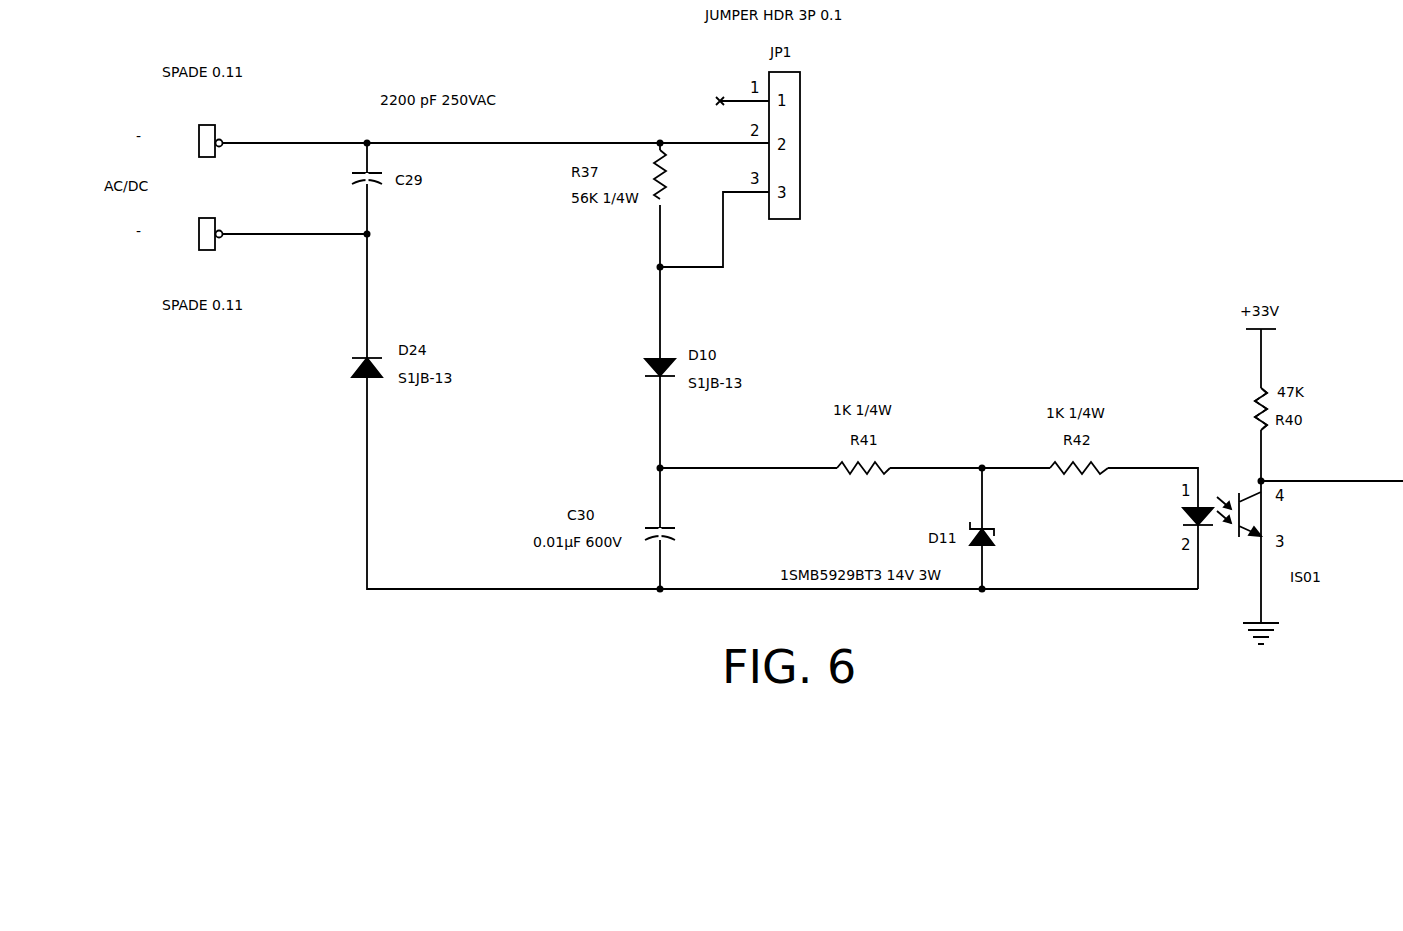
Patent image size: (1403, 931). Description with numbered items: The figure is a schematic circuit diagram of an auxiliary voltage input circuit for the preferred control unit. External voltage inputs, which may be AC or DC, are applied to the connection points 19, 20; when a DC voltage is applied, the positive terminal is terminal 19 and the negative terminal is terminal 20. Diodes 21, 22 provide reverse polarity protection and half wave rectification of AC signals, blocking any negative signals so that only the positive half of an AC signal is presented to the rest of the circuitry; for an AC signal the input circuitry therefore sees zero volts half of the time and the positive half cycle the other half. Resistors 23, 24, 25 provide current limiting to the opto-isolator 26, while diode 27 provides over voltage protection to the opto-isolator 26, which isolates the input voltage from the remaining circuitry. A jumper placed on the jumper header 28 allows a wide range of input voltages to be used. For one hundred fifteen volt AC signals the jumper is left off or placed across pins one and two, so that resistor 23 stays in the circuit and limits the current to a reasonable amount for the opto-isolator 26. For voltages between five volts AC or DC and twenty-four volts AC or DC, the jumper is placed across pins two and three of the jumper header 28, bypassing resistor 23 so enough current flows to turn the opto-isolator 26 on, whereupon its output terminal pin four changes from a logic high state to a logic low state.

The connection point 19 is at (250, 108).
The connection point 20 is at (245, 216).
The diode 21 is at (395, 332).
The diode 22 is at (690, 330).
The resistor 23 is at (669, 118).
The resistor 24 is at (905, 451).
The resistor 25 is at (1120, 446).
The opto-isolator 26 is at (1240, 473).
The diode 27 is at (1020, 532).
The jumper header 28 is at (818, 143).